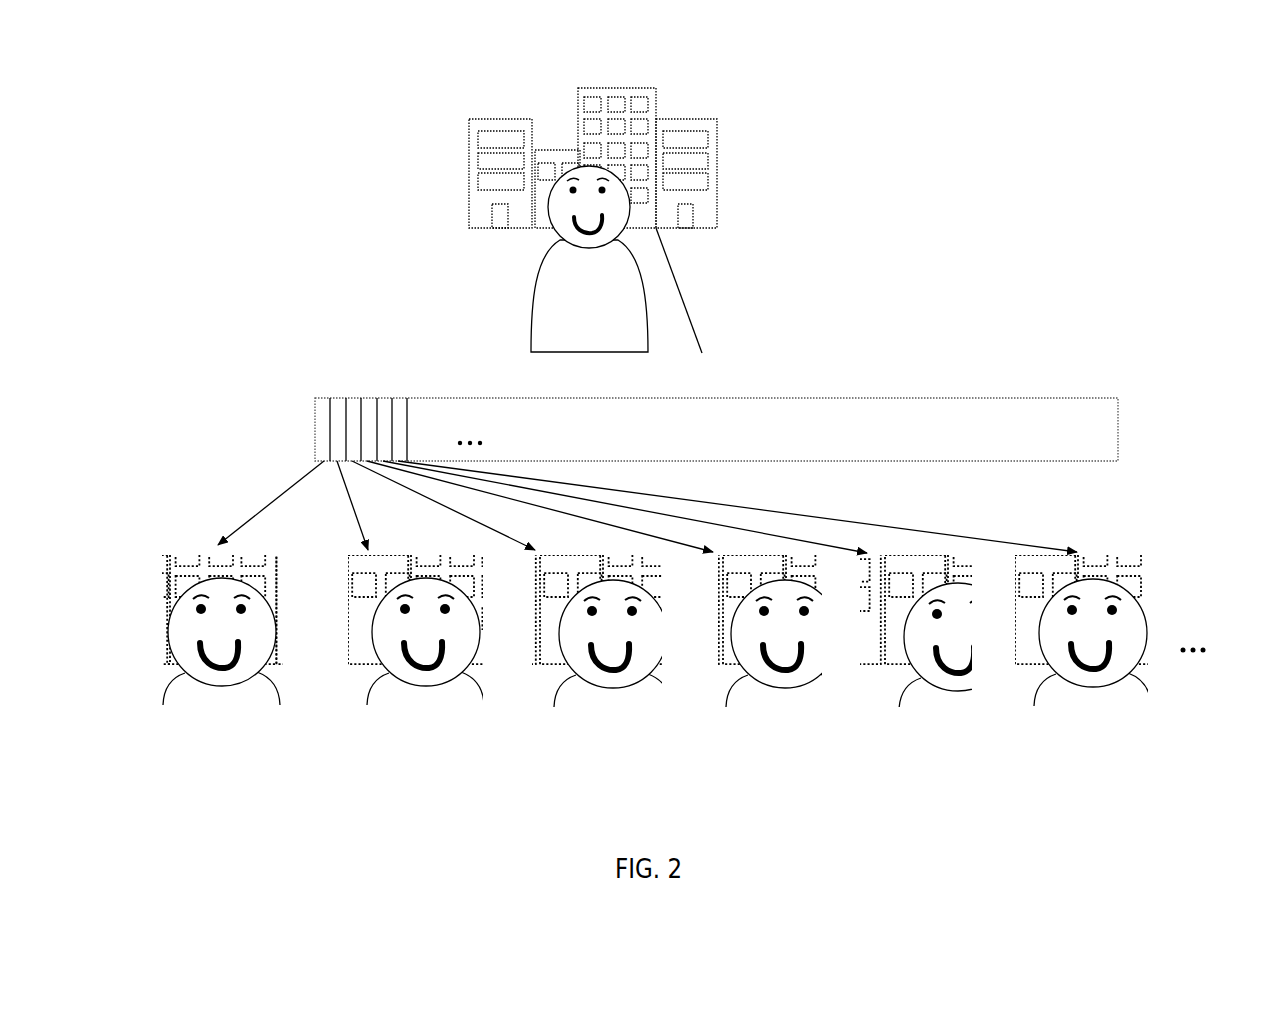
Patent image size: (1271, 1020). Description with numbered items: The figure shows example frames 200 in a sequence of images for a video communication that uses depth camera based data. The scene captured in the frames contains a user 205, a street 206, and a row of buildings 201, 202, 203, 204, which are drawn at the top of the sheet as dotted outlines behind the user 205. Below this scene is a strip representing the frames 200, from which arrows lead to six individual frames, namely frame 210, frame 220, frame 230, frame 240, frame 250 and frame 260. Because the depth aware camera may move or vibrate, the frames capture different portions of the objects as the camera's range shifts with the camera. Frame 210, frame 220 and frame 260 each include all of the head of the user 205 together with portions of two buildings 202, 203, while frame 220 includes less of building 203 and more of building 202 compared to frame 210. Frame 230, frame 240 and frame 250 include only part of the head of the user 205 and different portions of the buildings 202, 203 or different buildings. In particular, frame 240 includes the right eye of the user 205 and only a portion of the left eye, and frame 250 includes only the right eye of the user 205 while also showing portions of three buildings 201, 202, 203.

The frames 200 is at (611, 429).
The building 201 is at (463, 230).
The building 202 is at (540, 232).
The building 203 is at (663, 95).
The building 204 is at (712, 230).
The user 205 is at (508, 325).
The street 206 is at (660, 297).
The frame 210 is at (188, 614).
The frame 220 is at (429, 614).
The frame 230 is at (621, 614).
The frame 240 is at (804, 614).
The frame 250 is at (966, 614).
The frame 260 is at (1096, 614).